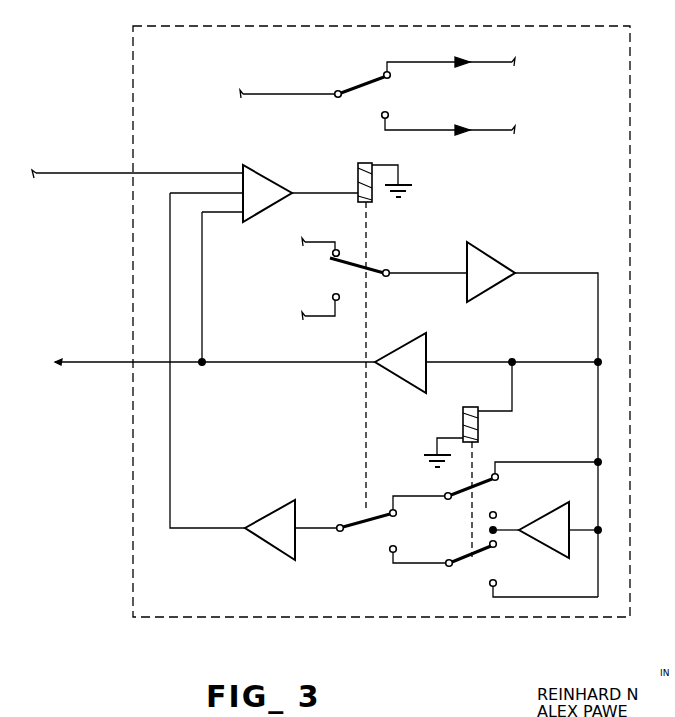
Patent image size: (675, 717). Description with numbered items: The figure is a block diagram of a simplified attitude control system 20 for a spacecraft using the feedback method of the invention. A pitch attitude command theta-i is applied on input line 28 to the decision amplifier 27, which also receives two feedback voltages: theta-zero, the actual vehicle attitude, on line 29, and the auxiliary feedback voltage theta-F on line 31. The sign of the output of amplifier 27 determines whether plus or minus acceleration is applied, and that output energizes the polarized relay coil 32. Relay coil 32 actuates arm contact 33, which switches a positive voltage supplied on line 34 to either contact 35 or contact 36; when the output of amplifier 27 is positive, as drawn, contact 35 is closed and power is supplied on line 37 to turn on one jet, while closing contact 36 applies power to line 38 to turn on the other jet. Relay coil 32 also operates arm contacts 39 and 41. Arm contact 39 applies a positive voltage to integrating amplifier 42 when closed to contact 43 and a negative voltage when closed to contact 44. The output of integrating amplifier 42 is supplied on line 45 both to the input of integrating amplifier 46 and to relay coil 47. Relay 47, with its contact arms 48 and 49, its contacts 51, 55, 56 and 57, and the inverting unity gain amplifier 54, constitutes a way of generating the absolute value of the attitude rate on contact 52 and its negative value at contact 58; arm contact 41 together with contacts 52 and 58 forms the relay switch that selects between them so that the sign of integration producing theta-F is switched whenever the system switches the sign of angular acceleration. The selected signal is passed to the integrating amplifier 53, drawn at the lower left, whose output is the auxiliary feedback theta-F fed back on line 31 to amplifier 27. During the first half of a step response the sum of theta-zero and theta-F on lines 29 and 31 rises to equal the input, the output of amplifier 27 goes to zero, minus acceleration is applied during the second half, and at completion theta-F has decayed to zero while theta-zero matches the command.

The attitude control system 20 is at (633, 288).
The decision amplifier 27 is at (268, 178).
The input line 28 is at (68, 171).
The feedback line 29 is at (112, 364).
The auxiliary feedback line 31 is at (171, 424).
The polarized relay coil 32 is at (358, 166).
The arm contact 33 is at (369, 74).
The positive voltage line 34 is at (298, 93).
The contact 35 is at (391, 76).
The contact 36 is at (389, 115).
The power line 37 is at (483, 62).
The power line 38 is at (483, 130).
The arm contact 39 is at (344, 264).
The arm contact 41 is at (352, 518).
The integrating amplifier 42 is at (500, 264).
The contact 43 is at (339, 250).
The contact 44 is at (339, 300).
The output line 45 is at (565, 272).
The integrating amplifier 46 is at (428, 349).
The relay coil 47 is at (480, 426).
The contact arm 48 is at (468, 491).
The contact arm 49 is at (466, 557).
The contact 51 is at (499, 477).
The contact 52 is at (393, 500).
The integrator 53 is at (276, 511).
The inverting unity gain amplifier 54 is at (553, 556).
The contact 55 is at (497, 514).
The contact 56 is at (497, 545).
The contact 57 is at (490, 588).
The contact 58 is at (390, 553).